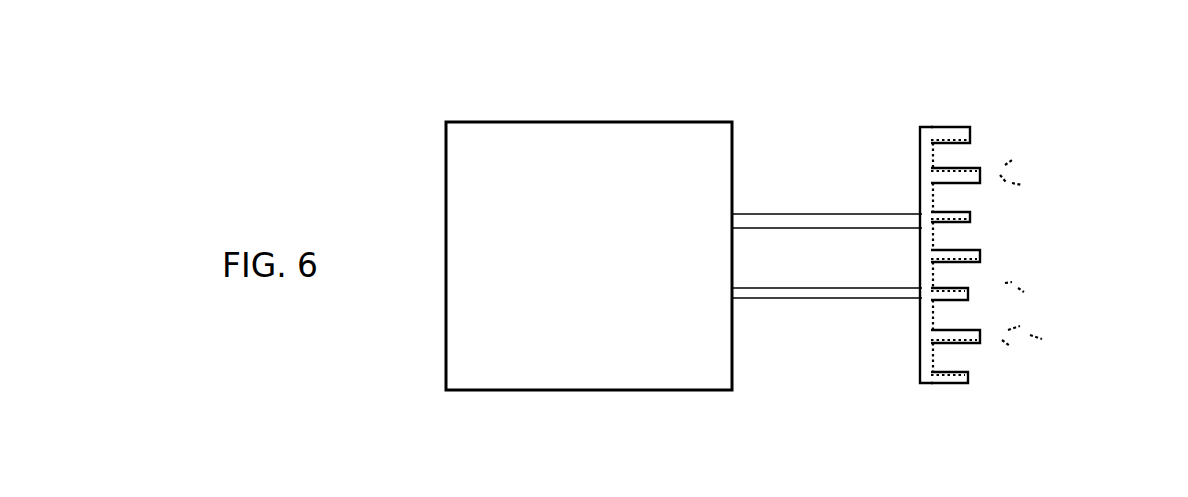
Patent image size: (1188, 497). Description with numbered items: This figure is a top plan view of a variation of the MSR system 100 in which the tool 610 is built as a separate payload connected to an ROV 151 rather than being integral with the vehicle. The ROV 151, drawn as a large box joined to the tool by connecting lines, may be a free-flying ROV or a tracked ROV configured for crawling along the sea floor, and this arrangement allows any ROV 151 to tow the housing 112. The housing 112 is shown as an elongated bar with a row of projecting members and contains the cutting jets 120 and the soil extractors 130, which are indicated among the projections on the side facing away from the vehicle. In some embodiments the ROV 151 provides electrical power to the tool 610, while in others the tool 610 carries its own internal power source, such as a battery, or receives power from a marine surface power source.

The ROV 151 is at (607, 121).
The tool 610 is at (976, 221).
The MSR system 100 is at (1020, 128).
The housing 112 is at (922, 167).
The cutting jets 120 is at (970, 213).
The soil extractors 130 is at (940, 248).